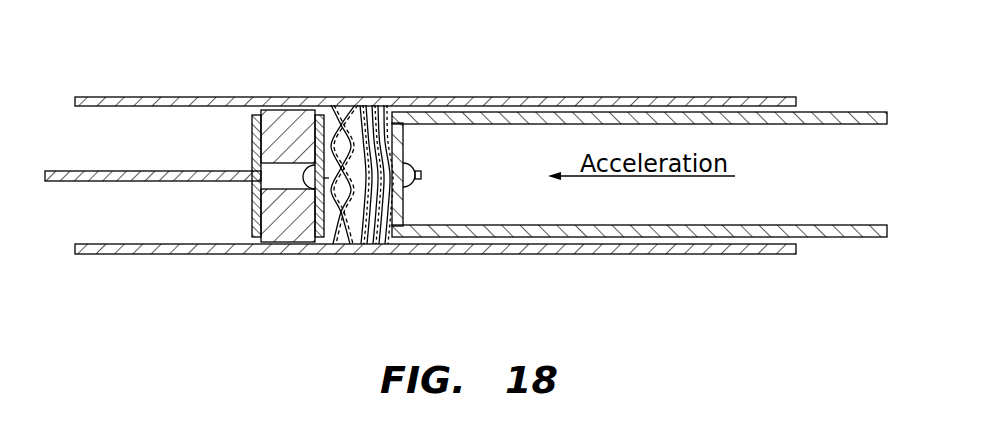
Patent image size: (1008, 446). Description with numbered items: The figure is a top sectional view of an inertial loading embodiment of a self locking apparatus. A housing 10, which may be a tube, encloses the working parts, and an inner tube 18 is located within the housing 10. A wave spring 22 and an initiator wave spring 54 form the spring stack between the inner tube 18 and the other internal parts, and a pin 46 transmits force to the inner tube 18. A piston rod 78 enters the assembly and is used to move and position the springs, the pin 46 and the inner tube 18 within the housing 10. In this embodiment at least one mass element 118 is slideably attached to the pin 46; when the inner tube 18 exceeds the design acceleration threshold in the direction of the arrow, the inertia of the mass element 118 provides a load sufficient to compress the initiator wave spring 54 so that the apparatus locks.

The housing 10 is at (748, 97).
The inner tube 18 is at (837, 124).
The wave spring 22 is at (349, 105).
The pin 46 is at (407, 187).
The initiator wave spring 54 is at (298, 226).
The piston rod 78 is at (186, 171).
The mass element 118 is at (287, 113).